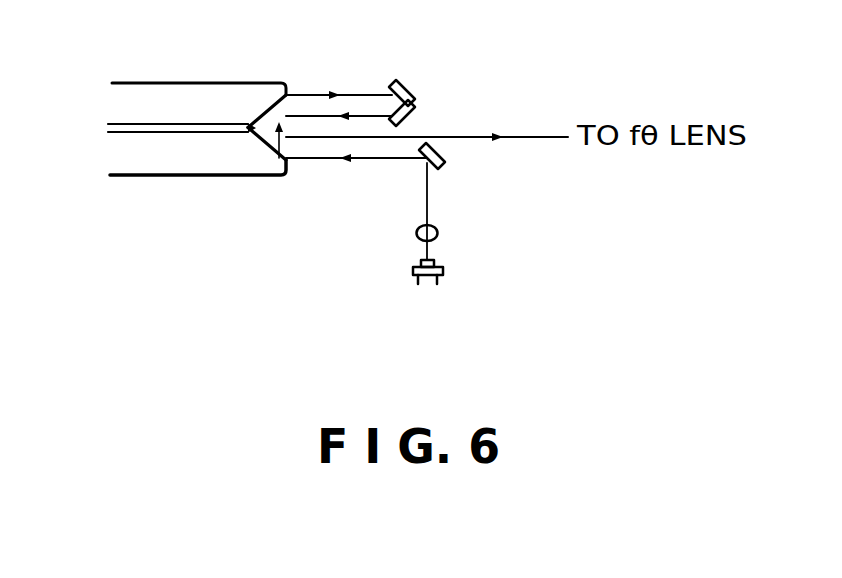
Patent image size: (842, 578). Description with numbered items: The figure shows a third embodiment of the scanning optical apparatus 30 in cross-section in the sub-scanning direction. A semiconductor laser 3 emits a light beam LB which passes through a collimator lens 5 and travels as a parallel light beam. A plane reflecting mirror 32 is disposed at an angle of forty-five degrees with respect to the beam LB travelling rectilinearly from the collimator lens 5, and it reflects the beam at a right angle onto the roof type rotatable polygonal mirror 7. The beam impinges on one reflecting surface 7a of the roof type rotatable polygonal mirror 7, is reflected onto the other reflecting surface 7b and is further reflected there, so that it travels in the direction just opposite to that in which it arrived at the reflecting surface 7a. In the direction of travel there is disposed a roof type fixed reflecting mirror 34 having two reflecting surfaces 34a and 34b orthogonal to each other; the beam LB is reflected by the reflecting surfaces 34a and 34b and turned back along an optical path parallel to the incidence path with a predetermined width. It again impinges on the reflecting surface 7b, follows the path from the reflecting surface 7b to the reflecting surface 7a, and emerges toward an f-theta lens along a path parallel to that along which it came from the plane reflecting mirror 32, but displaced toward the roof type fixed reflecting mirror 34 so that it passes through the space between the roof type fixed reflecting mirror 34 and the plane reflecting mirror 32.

The roof type rotatable polygonal mirror 7 is at (163, 168).
The reflecting surface 7a is at (263, 153).
The reflecting surface 7b is at (258, 108).
The scanning optical apparatus 30 is at (297, 251).
The plane reflecting mirror 32 is at (443, 160).
The roof type fixed reflecting mirror 34 is at (442, 71).
The reflecting surface 34a is at (407, 92).
The reflecting surface 34b is at (400, 119).
The collimator lens 5 is at (438, 233).
The semiconductor laser 3 is at (443, 271).
The light beam LB is at (427, 259).